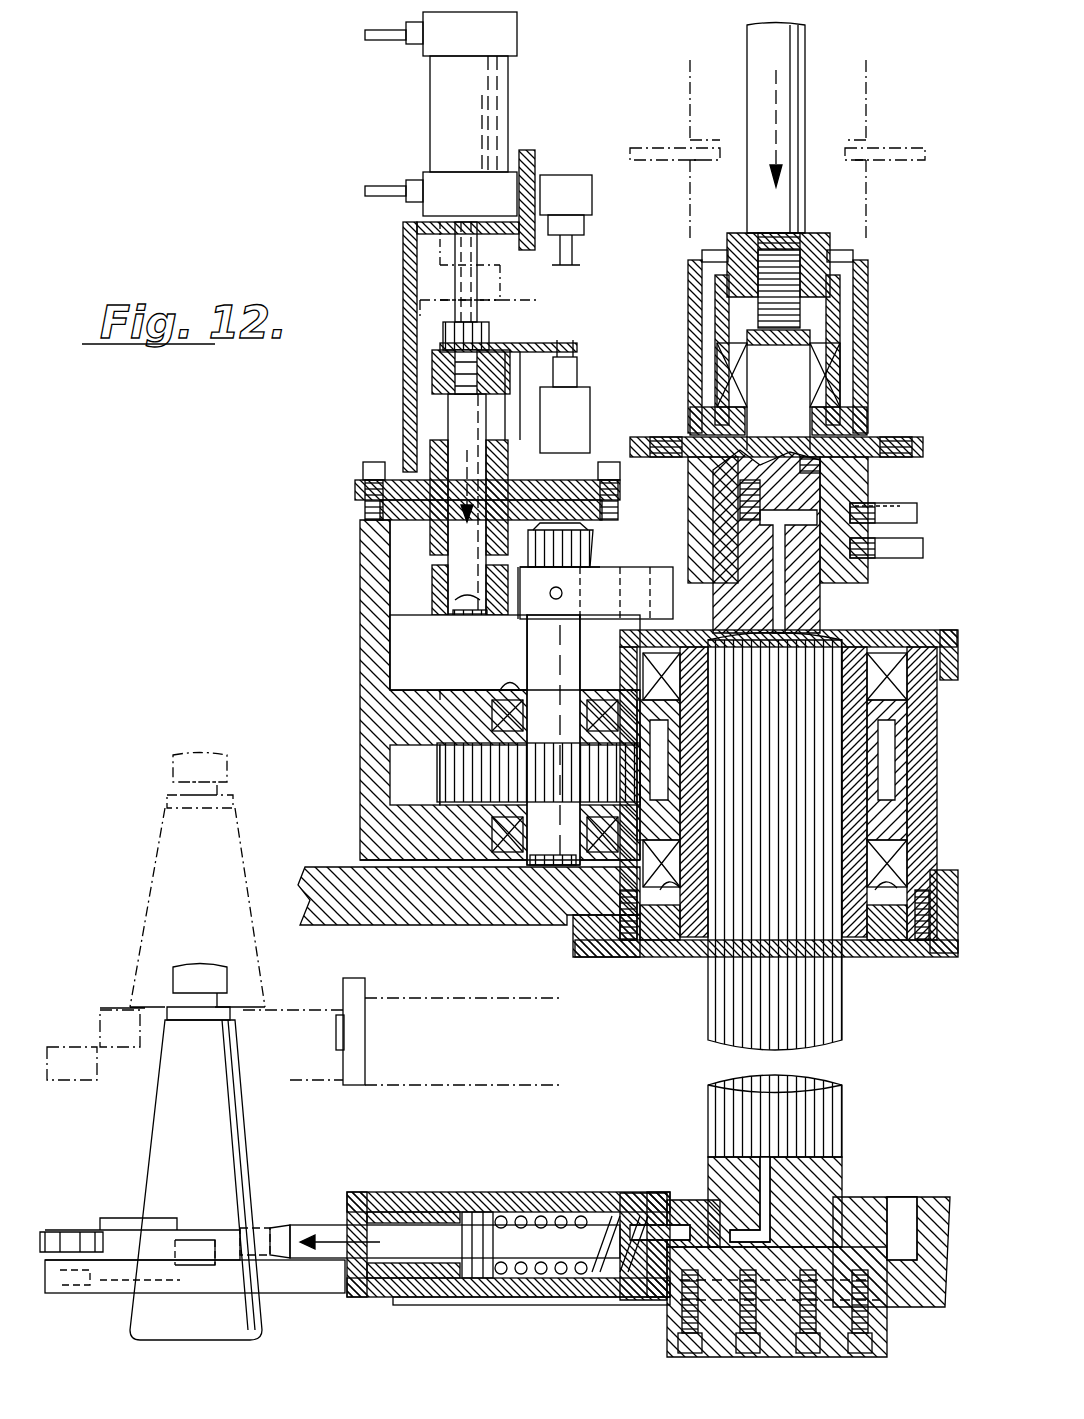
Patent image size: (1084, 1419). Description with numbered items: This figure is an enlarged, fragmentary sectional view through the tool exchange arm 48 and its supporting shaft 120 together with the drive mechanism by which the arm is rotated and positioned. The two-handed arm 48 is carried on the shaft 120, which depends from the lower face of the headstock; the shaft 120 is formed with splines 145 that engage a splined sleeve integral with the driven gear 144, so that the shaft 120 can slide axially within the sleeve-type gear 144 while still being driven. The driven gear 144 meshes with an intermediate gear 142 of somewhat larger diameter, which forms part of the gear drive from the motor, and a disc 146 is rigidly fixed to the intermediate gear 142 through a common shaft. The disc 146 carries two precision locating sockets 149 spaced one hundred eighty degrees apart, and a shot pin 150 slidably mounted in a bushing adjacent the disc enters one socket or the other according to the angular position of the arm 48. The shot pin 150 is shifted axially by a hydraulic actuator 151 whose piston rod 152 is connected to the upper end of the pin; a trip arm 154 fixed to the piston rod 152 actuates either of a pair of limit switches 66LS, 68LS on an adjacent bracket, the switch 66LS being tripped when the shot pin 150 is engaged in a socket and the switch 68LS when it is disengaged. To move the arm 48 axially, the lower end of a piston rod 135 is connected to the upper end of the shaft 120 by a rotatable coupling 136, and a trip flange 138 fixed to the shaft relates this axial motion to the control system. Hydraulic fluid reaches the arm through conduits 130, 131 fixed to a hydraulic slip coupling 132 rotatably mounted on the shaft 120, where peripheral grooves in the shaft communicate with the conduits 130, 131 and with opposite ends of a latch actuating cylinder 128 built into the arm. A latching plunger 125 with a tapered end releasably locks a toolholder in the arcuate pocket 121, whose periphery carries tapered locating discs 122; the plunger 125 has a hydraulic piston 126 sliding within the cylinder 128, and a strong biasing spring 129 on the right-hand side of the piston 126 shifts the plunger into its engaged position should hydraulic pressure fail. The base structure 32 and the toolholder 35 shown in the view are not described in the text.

The hydraulic actuator 151 is at (430, 105).
The limit switch 68LS is at (592, 200).
The piston rod 152 is at (455, 300).
The trip arm 154 is at (577, 346).
The limit switch 66LS is at (590, 396).
The shot pin 150 is at (450, 438).
The disc 146 is at (440, 612).
The locating sockets 149 is at (640, 567).
The driven gear 144 is at (598, 690).
The intermediate gear 142 is at (437, 775).
The base plate 32 is at (455, 930).
The piston rod 135 is at (805, 215).
The rotatable coupling 136 is at (868, 330).
The trip flange 138 is at (898, 437).
The conduit 130 is at (878, 515).
The conduit 131 is at (917, 520).
The hydraulic slip coupling 132 is at (868, 575).
The splines 145 is at (718, 1022).
The shaft 120 is at (850, 1100).
The hydraulic cylinder 128 is at (512, 1192).
The tool exchange arm 48 is at (490, 1305).
The latching plunger 125 is at (305, 1225).
The hydraulic piston 126 is at (465, 1212).
The biasing spring 129 is at (620, 1215).
The tool holder 35 is at (262, 1318).
The pocket 121 is at (135, 1283).
The locating discs 122 is at (62, 1232).